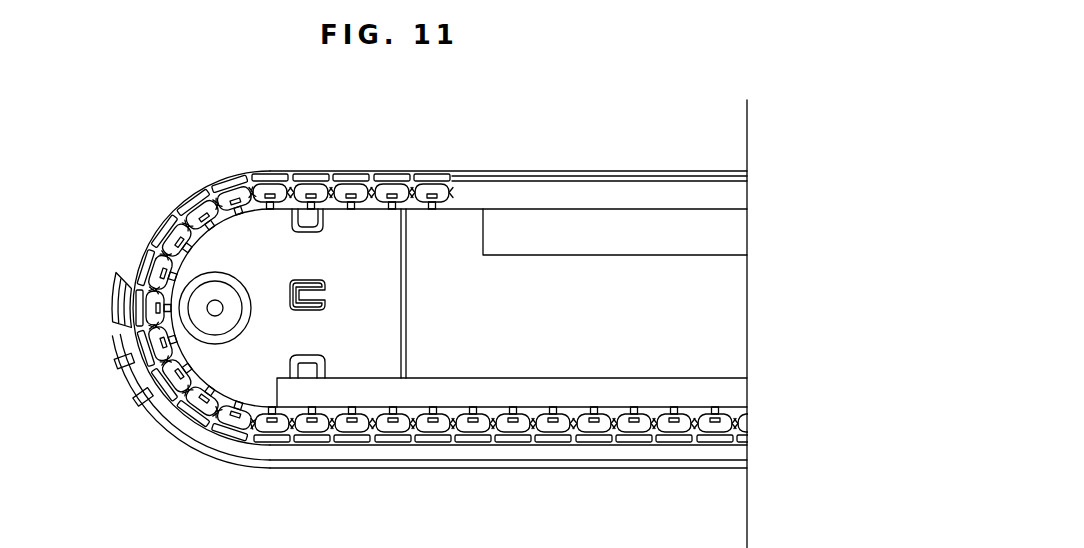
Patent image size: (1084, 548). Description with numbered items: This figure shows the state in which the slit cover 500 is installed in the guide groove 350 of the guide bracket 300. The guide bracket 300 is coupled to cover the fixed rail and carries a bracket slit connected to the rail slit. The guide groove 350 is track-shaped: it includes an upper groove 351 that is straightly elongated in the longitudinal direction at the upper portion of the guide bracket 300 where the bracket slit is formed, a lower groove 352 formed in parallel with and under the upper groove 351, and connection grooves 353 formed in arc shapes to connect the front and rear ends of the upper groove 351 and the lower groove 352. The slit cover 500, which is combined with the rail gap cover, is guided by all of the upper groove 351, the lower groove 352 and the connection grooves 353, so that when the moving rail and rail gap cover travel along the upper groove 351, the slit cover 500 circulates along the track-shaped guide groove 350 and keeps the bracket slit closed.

The guide bracket 300 is at (725, 306).
The guide groove 350 is at (637, 158).
The upper groove 351 is at (578, 193).
The lower groove 352 is at (655, 436).
The connection grooves 353 is at (122, 333).
The slit cover 500 is at (197, 201).